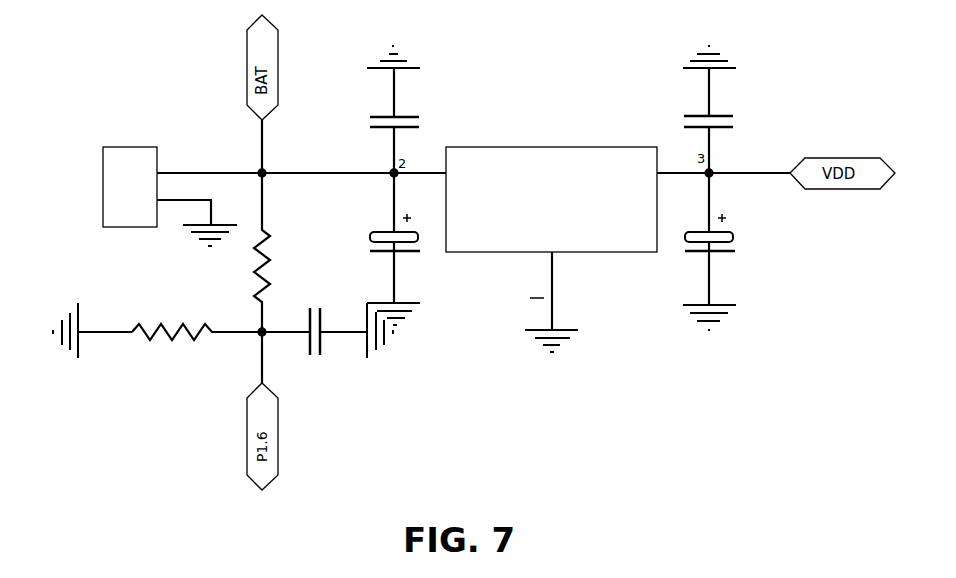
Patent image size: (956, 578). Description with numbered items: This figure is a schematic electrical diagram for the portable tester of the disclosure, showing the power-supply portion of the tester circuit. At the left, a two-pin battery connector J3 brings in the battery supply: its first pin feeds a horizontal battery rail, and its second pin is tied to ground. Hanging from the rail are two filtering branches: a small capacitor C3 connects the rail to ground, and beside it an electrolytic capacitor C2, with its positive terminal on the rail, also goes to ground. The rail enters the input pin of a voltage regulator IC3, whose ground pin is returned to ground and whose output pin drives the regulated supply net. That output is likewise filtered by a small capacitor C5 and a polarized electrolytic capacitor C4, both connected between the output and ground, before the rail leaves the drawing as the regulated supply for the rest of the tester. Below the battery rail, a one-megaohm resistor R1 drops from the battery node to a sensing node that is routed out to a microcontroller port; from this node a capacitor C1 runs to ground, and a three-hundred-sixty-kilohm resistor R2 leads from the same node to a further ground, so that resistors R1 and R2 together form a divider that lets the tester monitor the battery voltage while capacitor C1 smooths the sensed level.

The battery connector J3 is at (130, 189).
The resistor 1M R1 is at (274, 252).
The resistor 360K R2 is at (195, 333).
The capacitor 102 C1 is at (314, 354).
The electrolytic capacitor 100/6.3V C2 is at (415, 238).
The capacitor 105 C3 is at (380, 109).
The electrolytic capacitor 100/6.3V C4 is at (729, 252).
The capacitor 105 C5 is at (725, 109).
The voltage regulator 7130 IC3 is at (551, 179).